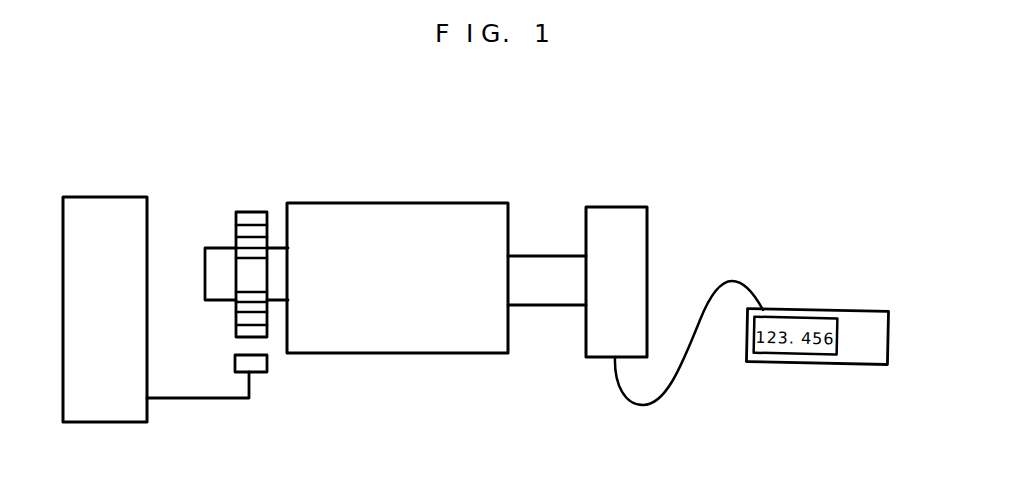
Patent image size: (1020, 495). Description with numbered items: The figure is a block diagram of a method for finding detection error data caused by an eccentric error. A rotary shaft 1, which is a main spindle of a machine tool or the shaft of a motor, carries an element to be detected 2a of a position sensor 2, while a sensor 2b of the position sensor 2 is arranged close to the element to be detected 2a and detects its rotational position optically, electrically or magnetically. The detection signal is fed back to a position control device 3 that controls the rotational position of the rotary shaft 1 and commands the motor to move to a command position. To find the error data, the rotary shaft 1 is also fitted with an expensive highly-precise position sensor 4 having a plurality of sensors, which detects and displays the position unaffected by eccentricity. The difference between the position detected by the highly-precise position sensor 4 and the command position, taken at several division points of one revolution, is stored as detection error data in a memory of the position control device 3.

The rotary shaft 1 is at (528, 256).
The position sensor 2 is at (193, 228).
The element to be detected 2a is at (252, 212).
The sensor 2b is at (247, 365).
The position control device 3 is at (105, 309).
The highly-precise position sensor 4 is at (616, 282).